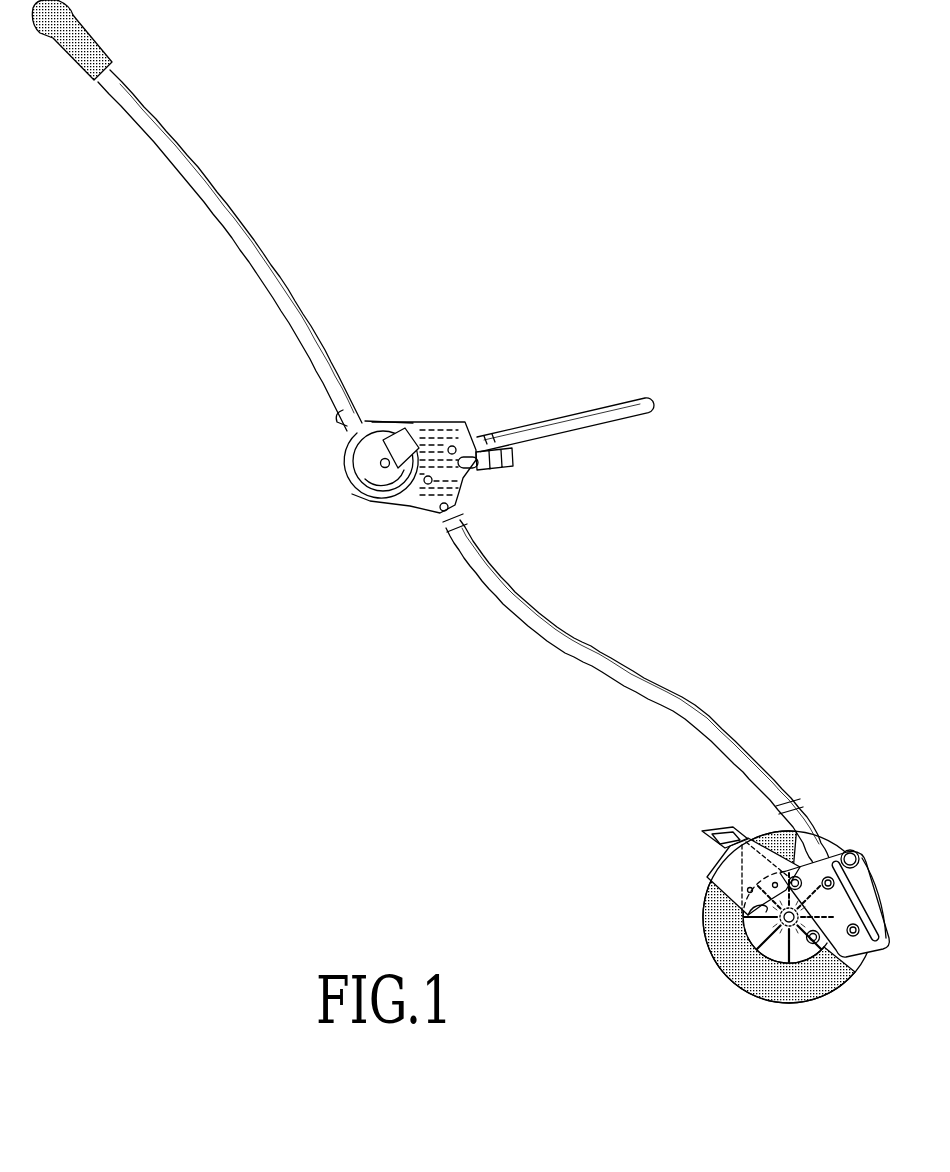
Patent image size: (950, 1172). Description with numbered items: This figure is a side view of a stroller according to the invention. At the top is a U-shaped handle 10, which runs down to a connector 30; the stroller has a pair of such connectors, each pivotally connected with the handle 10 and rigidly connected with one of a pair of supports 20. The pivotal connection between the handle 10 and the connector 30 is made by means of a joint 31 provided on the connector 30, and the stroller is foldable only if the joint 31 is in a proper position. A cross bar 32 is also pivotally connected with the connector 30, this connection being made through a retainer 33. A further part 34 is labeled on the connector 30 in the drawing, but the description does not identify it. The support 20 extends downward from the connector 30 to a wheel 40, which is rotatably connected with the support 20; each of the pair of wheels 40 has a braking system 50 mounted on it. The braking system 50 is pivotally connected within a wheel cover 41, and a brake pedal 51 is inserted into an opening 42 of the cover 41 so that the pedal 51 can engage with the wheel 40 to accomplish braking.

The handle 10 is at (218, 201).
The support 20 is at (631, 673).
The connector 30 is at (452, 428).
The joint 31 is at (370, 483).
The cross bar 32 is at (613, 410).
The retainer 33 is at (514, 458).
The locking wedge 34 is at (405, 427).
The wheel 40 is at (779, 896).
The wheel cover 41 is at (821, 847).
The opening 42 is at (738, 848).
The braking system 50 is at (703, 825).
The brake pedal 51 is at (727, 828).